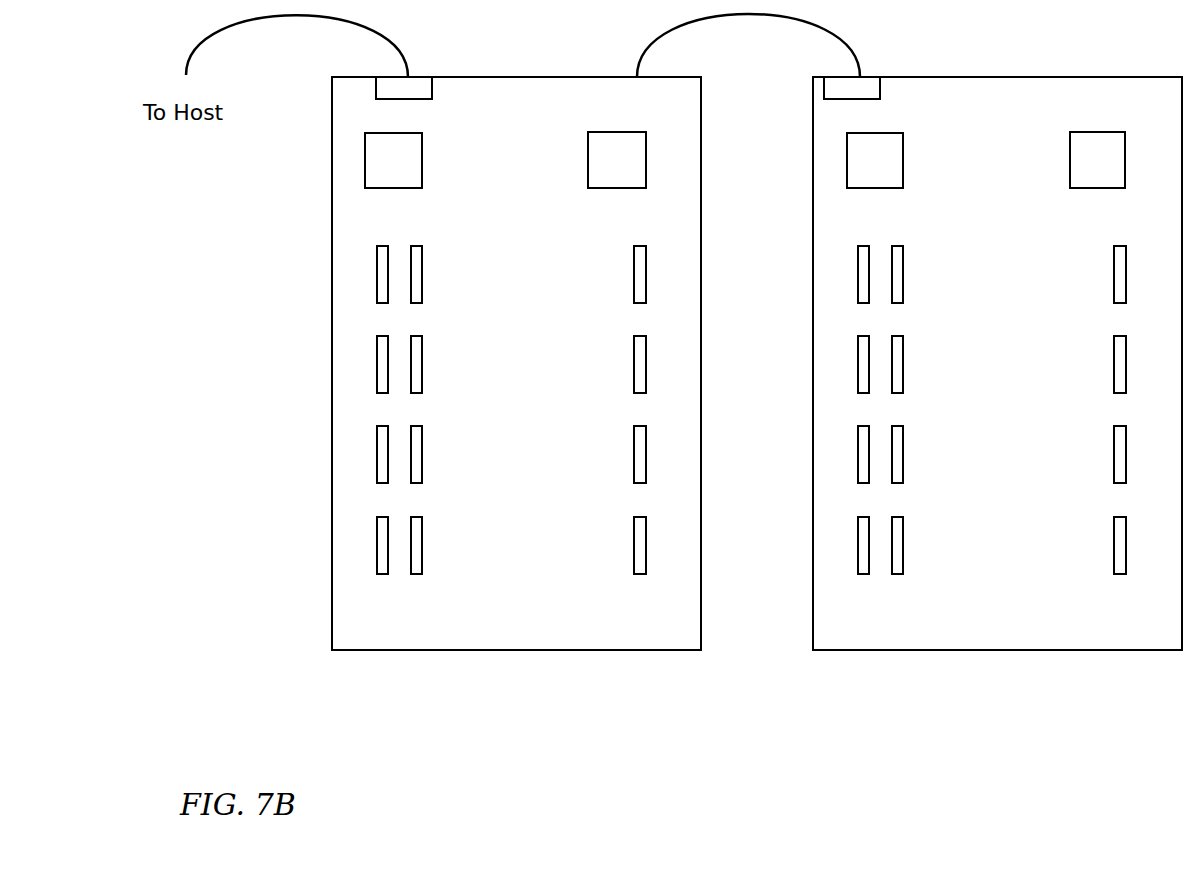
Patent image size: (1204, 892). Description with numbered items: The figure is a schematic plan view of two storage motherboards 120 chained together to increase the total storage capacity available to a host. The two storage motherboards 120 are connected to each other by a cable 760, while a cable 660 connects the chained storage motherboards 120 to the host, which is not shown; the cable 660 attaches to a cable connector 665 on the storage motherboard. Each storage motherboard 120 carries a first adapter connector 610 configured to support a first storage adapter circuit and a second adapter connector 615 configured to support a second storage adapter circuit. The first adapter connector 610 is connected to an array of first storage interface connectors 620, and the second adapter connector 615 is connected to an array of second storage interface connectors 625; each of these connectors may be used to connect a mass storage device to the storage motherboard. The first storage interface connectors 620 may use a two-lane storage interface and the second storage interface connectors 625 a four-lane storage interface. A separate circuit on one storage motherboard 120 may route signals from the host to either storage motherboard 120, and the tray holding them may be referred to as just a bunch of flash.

The storage motherboard 120 is at (702, 538).
The cable 660 is at (393, 42).
The cable 760 is at (840, 42).
The cable connector 665 is at (432, 86).
The first adapter connector 610 is at (422, 176).
The second adapter connector 615 is at (588, 142).
The first storage interface connectors 620 is at (377, 269).
The second storage interface connectors 625 is at (634, 268).